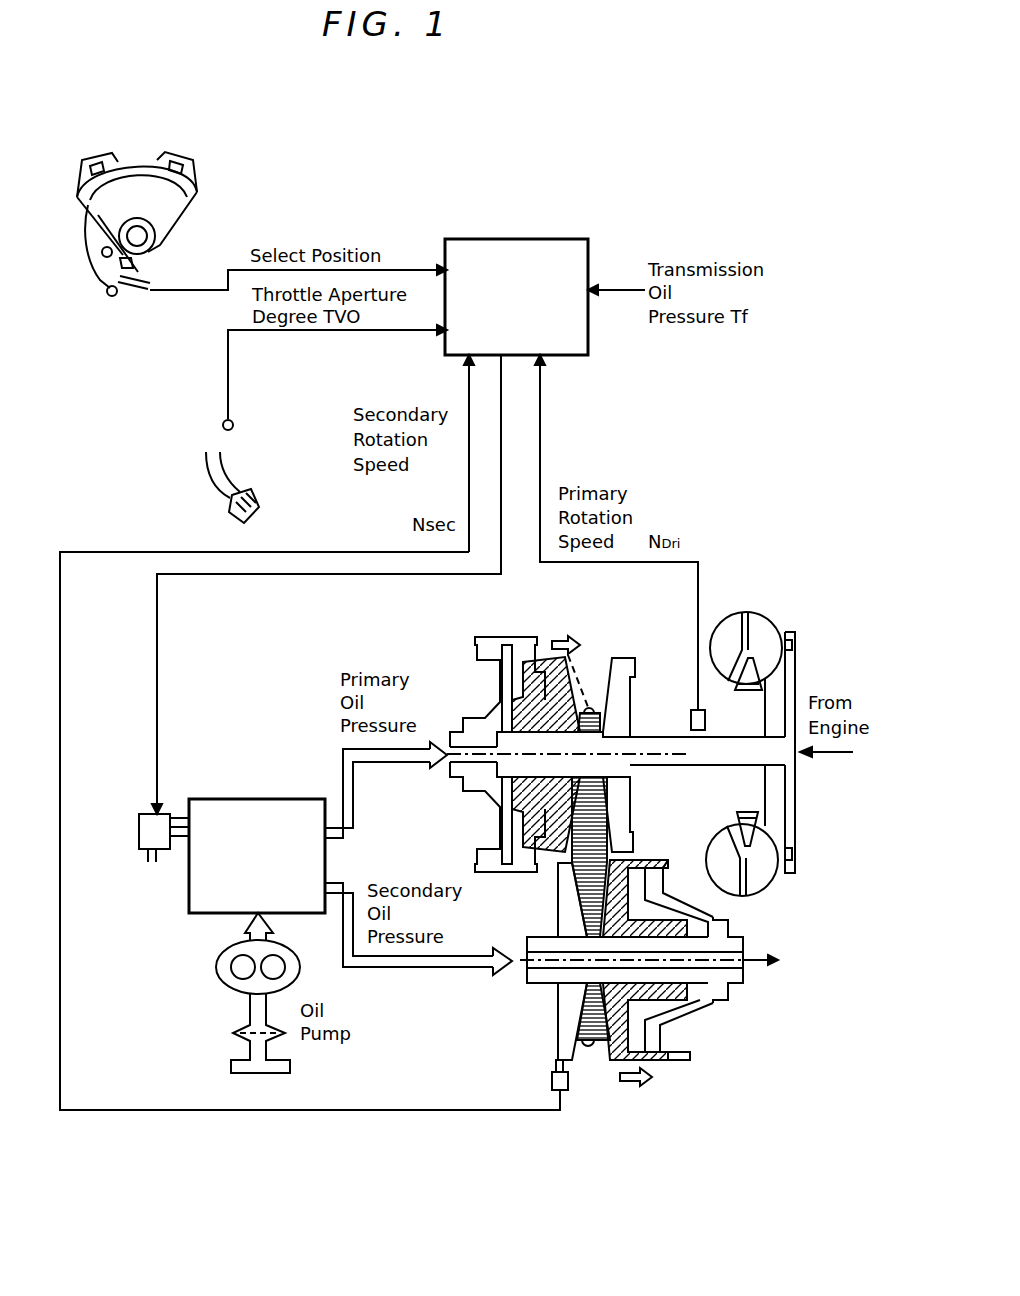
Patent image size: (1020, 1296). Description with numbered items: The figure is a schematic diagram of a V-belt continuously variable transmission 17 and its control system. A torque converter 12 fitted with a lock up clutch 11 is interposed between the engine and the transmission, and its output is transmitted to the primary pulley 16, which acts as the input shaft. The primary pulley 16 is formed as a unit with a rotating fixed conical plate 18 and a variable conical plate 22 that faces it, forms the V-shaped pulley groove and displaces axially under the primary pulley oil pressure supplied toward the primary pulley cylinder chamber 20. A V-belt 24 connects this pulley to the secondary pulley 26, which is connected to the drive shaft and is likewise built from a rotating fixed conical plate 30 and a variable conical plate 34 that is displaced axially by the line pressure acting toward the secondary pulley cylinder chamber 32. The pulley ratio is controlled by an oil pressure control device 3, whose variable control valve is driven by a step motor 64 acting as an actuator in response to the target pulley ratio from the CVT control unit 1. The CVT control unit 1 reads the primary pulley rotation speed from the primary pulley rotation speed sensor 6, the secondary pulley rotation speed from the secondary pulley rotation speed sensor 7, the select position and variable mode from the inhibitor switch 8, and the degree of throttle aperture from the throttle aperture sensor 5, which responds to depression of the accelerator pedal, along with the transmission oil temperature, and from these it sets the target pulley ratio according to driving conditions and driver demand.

The CVT control unit 1 is at (474, 238).
The oil pressure control device 3 is at (187, 901).
The throttle aperture sensor 5 is at (222, 425).
The primary pulley rotation speed sensor 6 is at (706, 720).
The secondary pulley rotation speed sensor 7 is at (568, 1081).
The inhibitor switch 8 is at (98, 153).
The lock up clutch 11 is at (790, 823).
The torque converter 12 is at (778, 619).
The primary pulley 16 is at (642, 645).
The continuously variable transmission 17 is at (744, 1002).
The fixed conical plate 18 is at (612, 658).
The primary pulley cylinder chamber 20 is at (523, 682).
The variable conical plate 22 is at (517, 793).
The V-belt 24 is at (612, 823).
The secondary pulley 26 is at (550, 893).
The fixed conical plate 30 is at (653, 1034).
The secondary pulley cylinder chamber 32 is at (697, 998).
The variable conical plate 34 is at (630, 881).
The step motor 64 is at (140, 814).